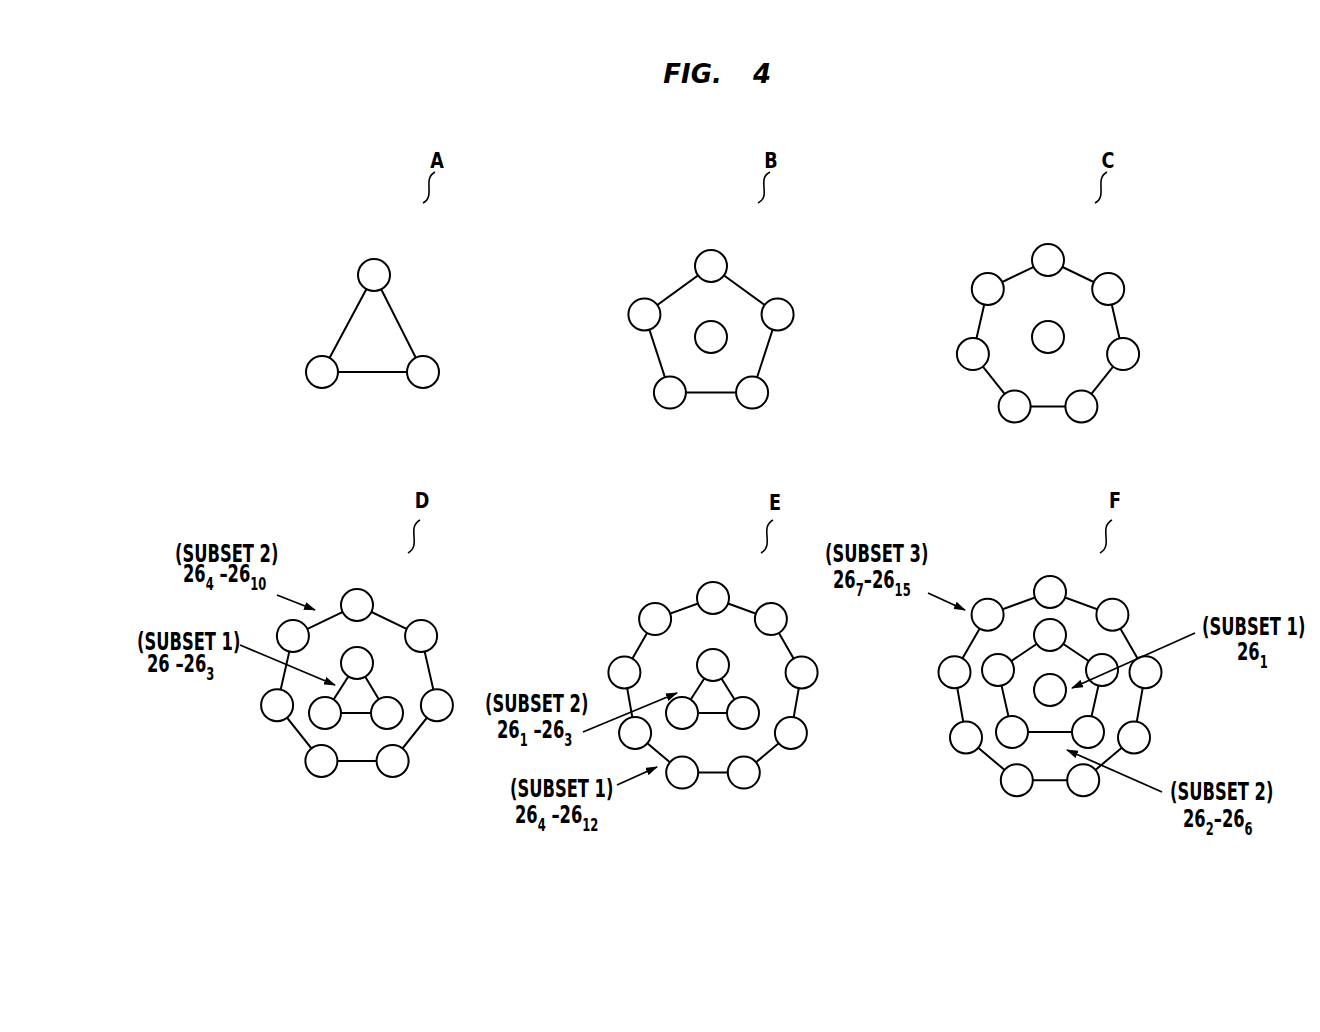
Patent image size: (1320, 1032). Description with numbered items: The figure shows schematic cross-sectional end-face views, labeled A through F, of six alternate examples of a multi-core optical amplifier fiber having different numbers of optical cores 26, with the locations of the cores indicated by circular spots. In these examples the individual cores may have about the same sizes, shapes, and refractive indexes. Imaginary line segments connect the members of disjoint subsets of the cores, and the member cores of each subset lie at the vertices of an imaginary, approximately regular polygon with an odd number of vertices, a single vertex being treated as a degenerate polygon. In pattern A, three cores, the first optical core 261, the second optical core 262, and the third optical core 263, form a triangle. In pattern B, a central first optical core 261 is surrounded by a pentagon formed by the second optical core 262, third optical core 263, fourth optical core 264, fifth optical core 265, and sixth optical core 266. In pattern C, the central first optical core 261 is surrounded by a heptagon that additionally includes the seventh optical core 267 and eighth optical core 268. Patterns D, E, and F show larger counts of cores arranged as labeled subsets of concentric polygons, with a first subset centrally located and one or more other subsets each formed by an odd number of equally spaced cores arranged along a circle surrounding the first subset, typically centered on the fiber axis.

The optical cores 26 is at (377, 327).
The first optical core 261 is at (385, 263).
The second optical core 262 is at (437, 370).
The third optical core 263 is at (307, 380).
The fourth optical core 264 is at (660, 407).
The fifth optical core 265 is at (632, 328).
The sixth optical core 266 is at (721, 253).
The seventh optical core 267 is at (977, 277).
The eighth optical core 268 is at (1060, 249).